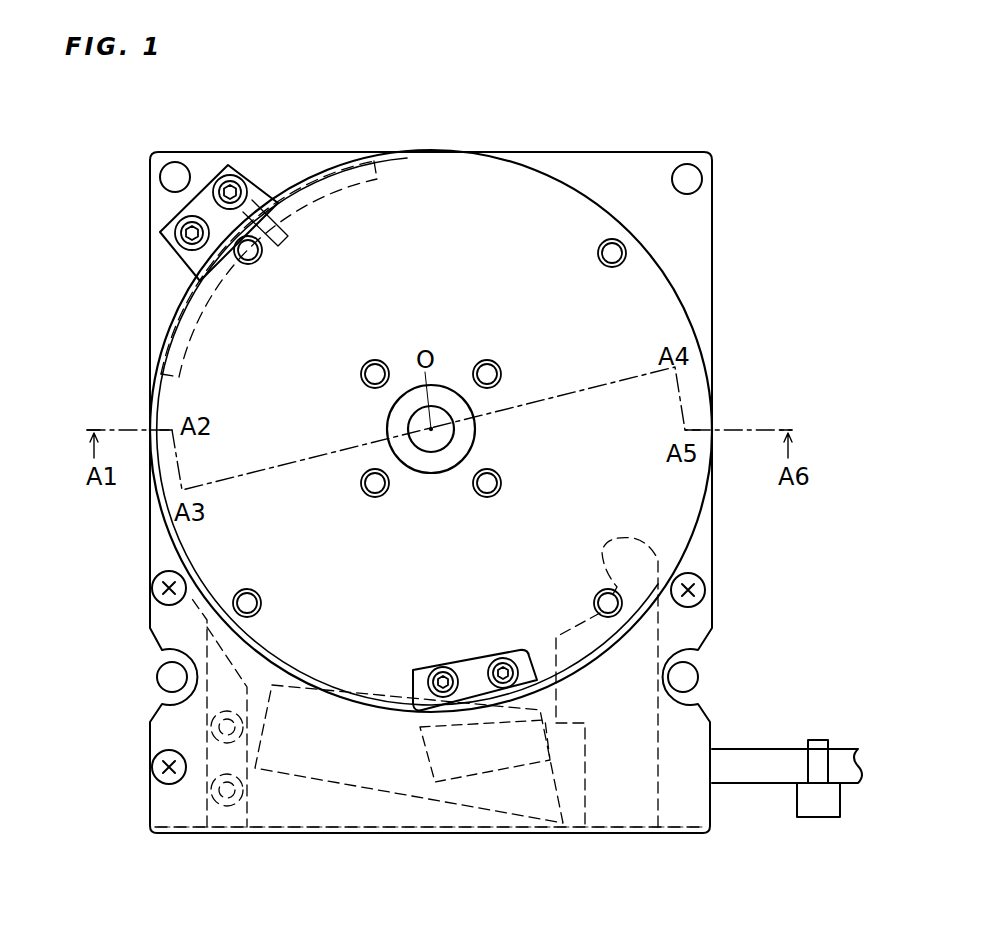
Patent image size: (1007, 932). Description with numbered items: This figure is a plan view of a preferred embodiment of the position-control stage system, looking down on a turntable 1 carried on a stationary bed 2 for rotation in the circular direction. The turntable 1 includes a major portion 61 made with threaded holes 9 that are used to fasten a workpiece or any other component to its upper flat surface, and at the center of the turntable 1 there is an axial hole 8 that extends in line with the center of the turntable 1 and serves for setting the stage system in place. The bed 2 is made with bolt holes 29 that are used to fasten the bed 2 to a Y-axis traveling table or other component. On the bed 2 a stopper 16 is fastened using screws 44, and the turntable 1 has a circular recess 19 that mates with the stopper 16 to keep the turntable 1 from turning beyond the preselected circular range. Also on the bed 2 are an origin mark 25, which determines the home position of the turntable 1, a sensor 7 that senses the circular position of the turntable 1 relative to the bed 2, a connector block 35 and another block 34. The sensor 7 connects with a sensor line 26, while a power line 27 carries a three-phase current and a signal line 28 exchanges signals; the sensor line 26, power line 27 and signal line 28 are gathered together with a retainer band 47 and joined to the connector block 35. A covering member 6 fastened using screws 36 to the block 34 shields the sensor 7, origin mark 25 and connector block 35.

The turntable 1 is at (495, 230).
The stationary bed 2 is at (640, 196).
The covering member 6 is at (340, 795).
The sensor 7 is at (380, 772).
The axial hole 8 is at (442, 437).
The threaded holes 9 is at (489, 375).
The stopper 16 is at (210, 215).
The circular recess 19 is at (338, 182).
The origin mark 25 is at (491, 750).
The sensor line 26 is at (787, 738).
The power line 27 is at (787, 738).
The signal line 28 is at (763, 762).
The bolt holes 29 is at (172, 178).
The block 34 is at (191, 800).
The connector block 35 is at (640, 778).
The screws 36 is at (700, 588).
The screws 44 is at (218, 192).
The retainer band 47 is at (815, 770).
The major portion 61 is at (410, 258).